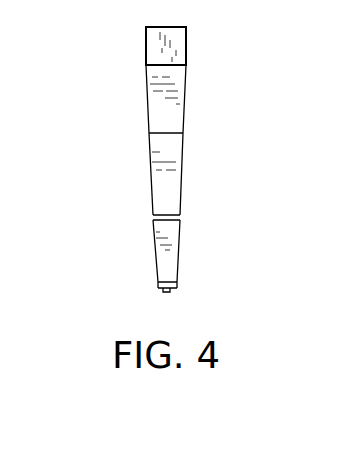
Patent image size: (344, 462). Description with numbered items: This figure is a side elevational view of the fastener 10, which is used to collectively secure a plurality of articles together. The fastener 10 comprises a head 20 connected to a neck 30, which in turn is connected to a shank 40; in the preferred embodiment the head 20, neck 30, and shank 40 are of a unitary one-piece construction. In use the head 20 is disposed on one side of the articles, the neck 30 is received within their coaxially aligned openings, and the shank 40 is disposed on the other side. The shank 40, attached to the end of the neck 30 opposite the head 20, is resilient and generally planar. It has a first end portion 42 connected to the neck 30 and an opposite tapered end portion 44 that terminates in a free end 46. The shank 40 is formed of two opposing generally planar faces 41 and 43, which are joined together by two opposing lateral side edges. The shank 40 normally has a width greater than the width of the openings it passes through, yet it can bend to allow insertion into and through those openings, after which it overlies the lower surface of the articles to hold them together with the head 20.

The fastener 10 is at (167, 170).
The head 20 is at (152, 47).
The neck 30 is at (157, 116).
The shank 40 is at (170, 219).
The planar face 41 is at (183, 142).
The first end portion 42 is at (150, 170).
The planar face 43 is at (150, 144).
The tapered end portion 44 is at (165, 255).
The free end 46 is at (167, 292).